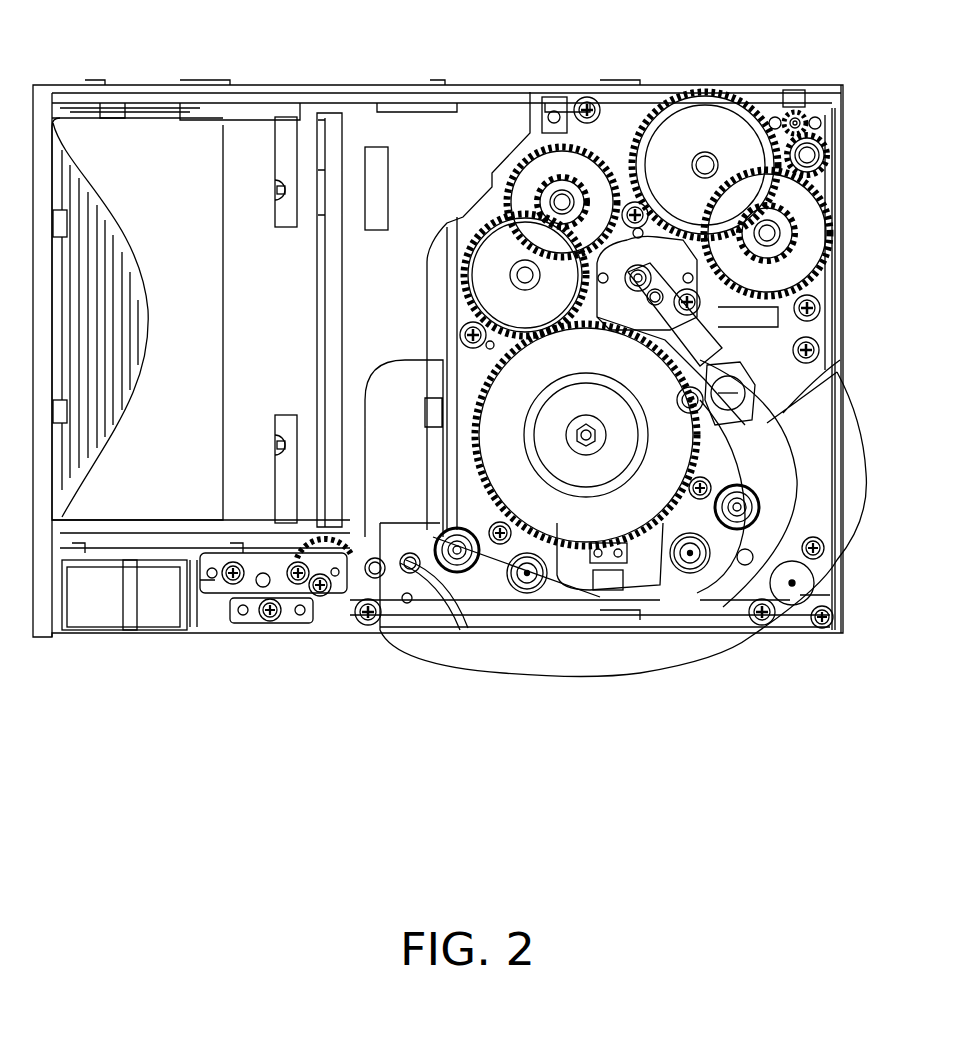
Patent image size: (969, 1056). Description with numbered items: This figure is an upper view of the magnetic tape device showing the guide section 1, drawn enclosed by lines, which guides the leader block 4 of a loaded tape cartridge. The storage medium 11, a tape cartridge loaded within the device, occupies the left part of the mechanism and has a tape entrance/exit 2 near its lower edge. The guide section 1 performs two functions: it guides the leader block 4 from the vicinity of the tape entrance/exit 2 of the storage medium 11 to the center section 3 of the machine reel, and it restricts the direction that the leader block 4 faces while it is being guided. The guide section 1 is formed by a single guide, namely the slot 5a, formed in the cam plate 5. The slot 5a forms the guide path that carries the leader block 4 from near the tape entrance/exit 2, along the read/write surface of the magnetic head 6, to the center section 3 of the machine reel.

The guide section 1 is at (537, 677).
The tape entrance/exit 2 is at (385, 538).
The center section of the machine reel 3 is at (638, 265).
The leader block 4 is at (663, 303).
The cam plate 5 is at (483, 578).
The slot 5a is at (838, 368).
The magnetic head 6 is at (617, 590).
The storage medium 11 is at (117, 118).